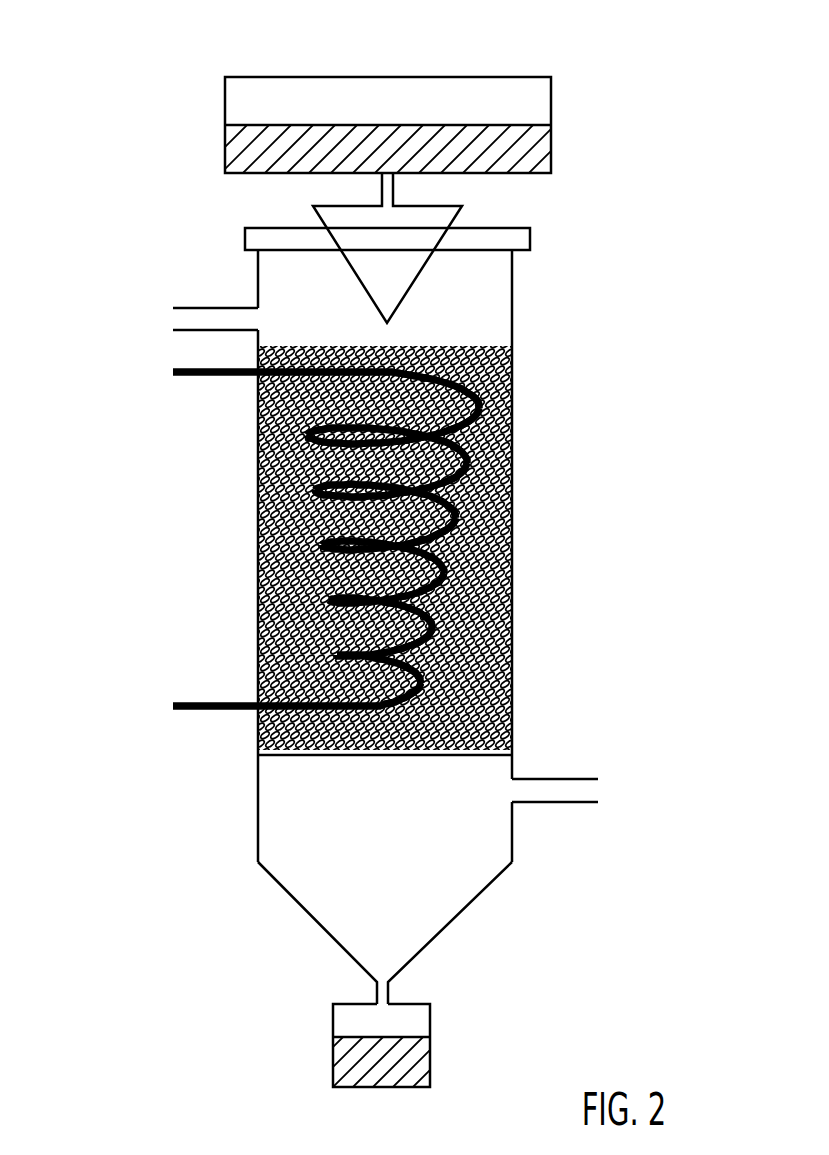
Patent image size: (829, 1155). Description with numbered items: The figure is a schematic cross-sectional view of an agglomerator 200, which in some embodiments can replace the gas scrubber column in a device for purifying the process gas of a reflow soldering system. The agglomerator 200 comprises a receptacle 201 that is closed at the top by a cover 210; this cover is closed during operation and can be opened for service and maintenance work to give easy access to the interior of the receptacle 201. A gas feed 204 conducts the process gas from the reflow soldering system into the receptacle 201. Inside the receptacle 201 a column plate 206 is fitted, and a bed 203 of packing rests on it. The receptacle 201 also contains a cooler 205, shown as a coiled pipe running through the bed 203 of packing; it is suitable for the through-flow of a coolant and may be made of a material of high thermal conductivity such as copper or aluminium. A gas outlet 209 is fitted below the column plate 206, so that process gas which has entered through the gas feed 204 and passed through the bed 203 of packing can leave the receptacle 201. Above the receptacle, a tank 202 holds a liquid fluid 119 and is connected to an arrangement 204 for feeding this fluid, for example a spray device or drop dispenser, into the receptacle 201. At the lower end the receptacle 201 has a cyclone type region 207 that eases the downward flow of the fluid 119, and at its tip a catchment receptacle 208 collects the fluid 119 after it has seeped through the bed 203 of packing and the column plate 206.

The agglomerator 200 is at (156, 61).
The liquid fluid 119 is at (503, 125).
The tank 202 is at (551, 158).
The gas feed 204 is at (458, 208).
The cover 210 is at (530, 240).
The receptacle 201 is at (513, 283).
The bed of packing 203 is at (478, 345).
The cooler 205 is at (200, 375).
The column plate 206 is at (293, 757).
The gas outlet 209 is at (558, 779).
The cyclone type region 207 is at (447, 922).
The catchment receptacle 208 is at (430, 1057).